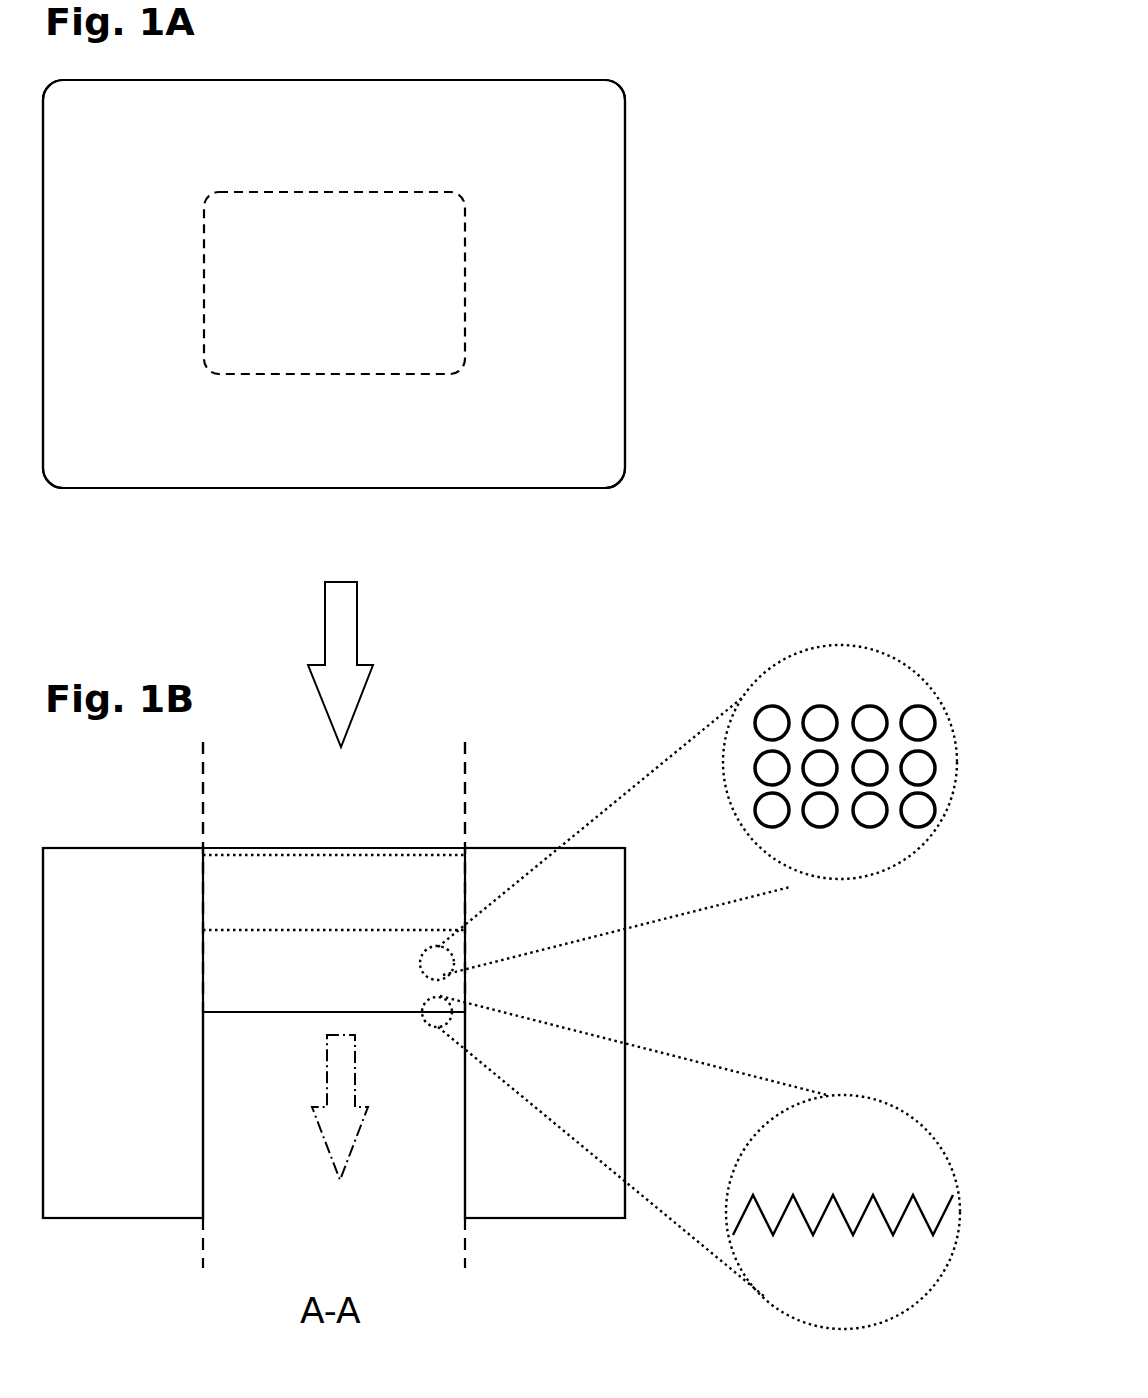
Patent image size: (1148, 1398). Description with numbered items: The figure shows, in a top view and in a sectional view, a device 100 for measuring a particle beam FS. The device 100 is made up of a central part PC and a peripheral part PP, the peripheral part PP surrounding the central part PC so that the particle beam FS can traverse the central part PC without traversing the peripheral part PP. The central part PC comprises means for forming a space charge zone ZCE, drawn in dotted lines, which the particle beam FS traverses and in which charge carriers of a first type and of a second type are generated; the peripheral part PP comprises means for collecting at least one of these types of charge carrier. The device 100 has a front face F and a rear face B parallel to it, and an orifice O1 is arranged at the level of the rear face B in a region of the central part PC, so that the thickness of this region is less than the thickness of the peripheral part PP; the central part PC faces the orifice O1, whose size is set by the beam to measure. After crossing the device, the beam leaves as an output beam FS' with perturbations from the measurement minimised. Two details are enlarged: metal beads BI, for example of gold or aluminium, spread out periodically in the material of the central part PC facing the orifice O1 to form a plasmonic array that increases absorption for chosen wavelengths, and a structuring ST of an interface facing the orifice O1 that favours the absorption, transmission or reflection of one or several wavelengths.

In FIG. 1A, the device 100 is at (708, 115).
In FIG. 1B, the device 100 is at (597, 715).
In FIG. 1A, the peripheral part PP is at (175, 438).
In FIG. 1B, the peripheral part PP is at (334, 989).
In FIG. 1A, the central part PC is at (402, 223).
In FIG. 1B, the central part PC is at (334, 877).
In FIG. 1B, the space charge zone ZCE is at (334, 892).
In FIG. 1B, the front face F is at (412, 695).
In FIG. 1B, the particle beam FS is at (265, 644).
In FIG. 1B, the output beam FS' is at (321, 1141).
In FIG. 1B, the rear face B is at (232, 1270).
In FIG. 1B, the orifice O1 is at (420, 1210).
In FIG. 1B, the metal beads BI is at (820, 720).
In FIG. 1B, the structuring ST is at (797, 1262).